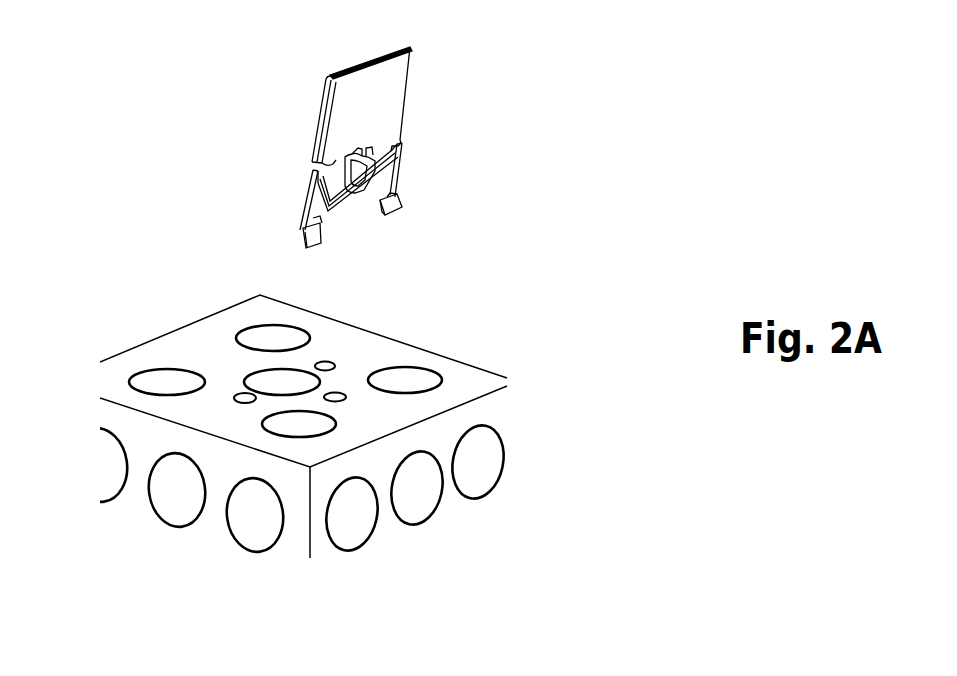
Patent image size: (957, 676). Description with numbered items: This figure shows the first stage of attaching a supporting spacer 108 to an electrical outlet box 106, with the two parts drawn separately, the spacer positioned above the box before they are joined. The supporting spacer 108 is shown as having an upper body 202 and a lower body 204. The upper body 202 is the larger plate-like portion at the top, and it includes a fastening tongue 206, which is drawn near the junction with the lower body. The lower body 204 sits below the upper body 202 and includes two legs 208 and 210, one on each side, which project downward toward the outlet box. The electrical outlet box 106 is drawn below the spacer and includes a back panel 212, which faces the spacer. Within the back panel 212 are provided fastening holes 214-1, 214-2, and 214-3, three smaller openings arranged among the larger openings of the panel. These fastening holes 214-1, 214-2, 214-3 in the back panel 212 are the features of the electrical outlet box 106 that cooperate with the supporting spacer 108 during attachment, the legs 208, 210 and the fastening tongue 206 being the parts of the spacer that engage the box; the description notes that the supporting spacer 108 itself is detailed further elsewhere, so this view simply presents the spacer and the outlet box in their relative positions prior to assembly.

The electrical outlet box 106 is at (543, 285).
The supporting spacer 108 is at (538, 38).
The upper body 202 is at (406, 98).
The lower body 204 is at (305, 200).
The fastening tongue 206 is at (378, 168).
The leg 208 is at (399, 216).
The leg 210 is at (306, 254).
The back panel 212 is at (155, 369).
The fastening hole 214-1 is at (350, 392).
The fastening hole 214-2 is at (338, 358).
The fastening hole 214-3 is at (239, 388).